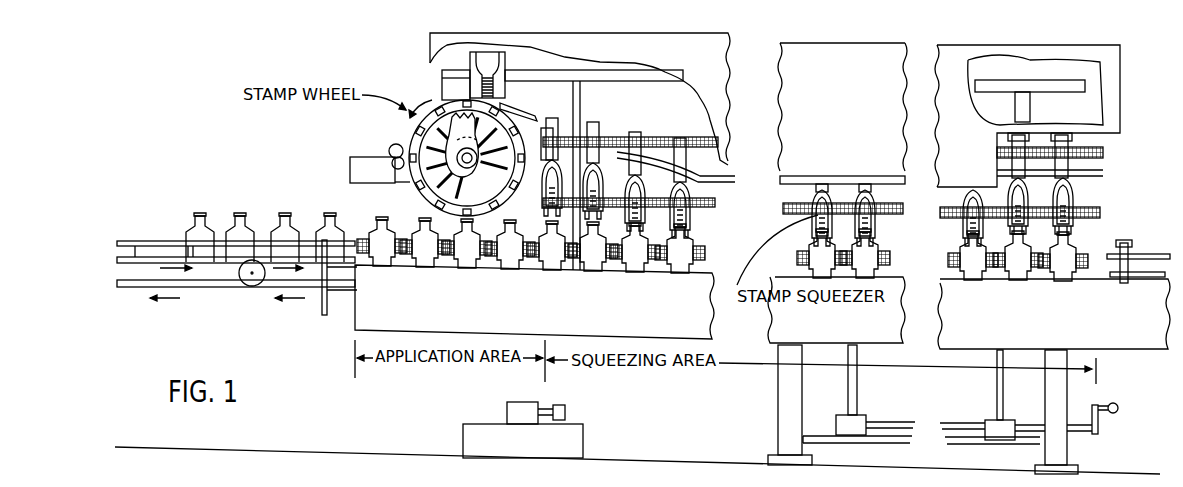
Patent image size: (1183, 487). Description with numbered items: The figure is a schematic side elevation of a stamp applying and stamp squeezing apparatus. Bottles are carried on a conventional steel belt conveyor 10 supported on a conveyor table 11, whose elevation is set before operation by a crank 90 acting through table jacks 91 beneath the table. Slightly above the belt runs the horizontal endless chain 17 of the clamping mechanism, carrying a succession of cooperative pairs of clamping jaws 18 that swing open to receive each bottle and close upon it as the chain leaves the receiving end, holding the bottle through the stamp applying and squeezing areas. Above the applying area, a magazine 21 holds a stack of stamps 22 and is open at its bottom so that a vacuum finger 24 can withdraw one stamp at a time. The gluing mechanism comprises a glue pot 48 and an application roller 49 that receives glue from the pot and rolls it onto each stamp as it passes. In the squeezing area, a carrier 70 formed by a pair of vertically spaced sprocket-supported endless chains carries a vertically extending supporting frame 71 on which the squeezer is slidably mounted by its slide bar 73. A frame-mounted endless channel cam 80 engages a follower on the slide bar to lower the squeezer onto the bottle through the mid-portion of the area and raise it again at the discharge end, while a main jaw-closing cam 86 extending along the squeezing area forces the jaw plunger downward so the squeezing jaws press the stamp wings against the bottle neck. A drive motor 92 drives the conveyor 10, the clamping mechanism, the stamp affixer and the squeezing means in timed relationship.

The steel belt conveyor 10 is at (263, 287).
The conveyor table 11 is at (628, 305).
The endless chain 17 is at (712, 250).
The clamping jaws 18 is at (418, 233).
The magazine 21 is at (487, 60).
The stamps 22 is at (450, 65).
The vacuum finger 24 is at (518, 112).
The glue pot 48 is at (362, 172).
The application roller 49 is at (400, 146).
The carrier 70 is at (700, 150).
The supporting frame 71 is at (646, 140).
The slide bar 73 is at (593, 128).
The endless channel cam 80 is at (1100, 172).
The main jaw-closing cam 86 is at (687, 167).
The crank 90 is at (1098, 420).
The table jacks 91 is at (1000, 400).
The drive motor 92 is at (512, 413).